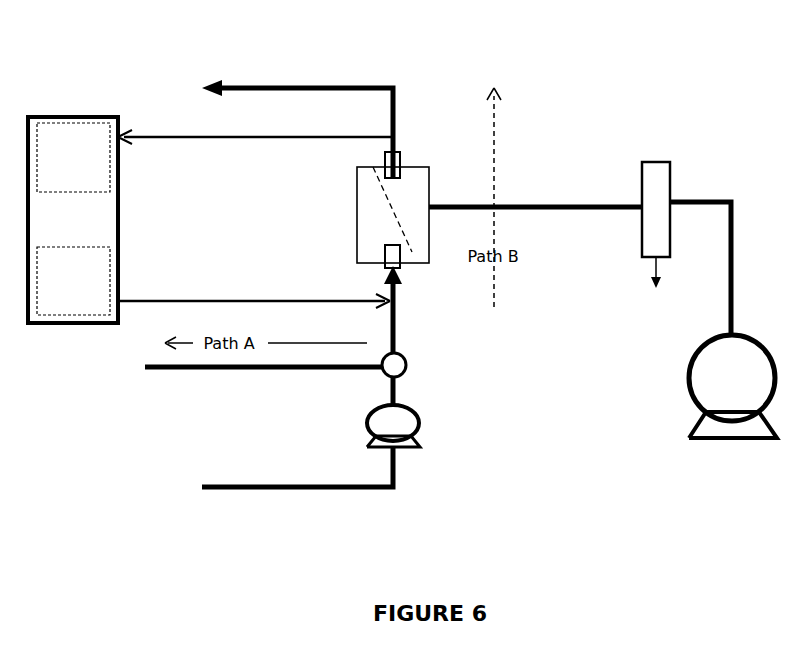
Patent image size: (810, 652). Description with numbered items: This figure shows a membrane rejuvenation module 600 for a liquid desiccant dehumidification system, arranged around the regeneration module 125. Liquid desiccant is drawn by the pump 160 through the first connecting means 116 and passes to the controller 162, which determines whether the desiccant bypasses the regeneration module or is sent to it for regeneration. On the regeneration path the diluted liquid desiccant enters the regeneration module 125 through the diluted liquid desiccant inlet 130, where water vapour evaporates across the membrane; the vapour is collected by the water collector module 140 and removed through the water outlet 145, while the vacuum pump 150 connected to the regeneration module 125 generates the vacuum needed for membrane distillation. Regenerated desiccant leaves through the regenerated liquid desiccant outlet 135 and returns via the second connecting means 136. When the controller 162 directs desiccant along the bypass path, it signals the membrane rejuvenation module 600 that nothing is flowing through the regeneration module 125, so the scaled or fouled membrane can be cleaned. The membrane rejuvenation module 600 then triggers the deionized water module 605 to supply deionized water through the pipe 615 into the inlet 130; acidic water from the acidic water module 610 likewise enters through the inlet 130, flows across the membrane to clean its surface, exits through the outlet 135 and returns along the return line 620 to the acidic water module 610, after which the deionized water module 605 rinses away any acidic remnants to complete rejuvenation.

The first connecting means 116 is at (221, 497).
The regeneration module 125 is at (433, 188).
The diluted liquid desiccant inlet 130 is at (405, 268).
The regenerated liquid desiccant outlet 135 is at (401, 153).
The second connecting means 136 is at (256, 82).
The water collector module 140 is at (663, 190).
The water outlet 145 is at (663, 286).
The vacuum pump 150 is at (760, 335).
The pump 160 is at (425, 442).
The controller 162 is at (380, 371).
The membrane rejuvenation module 600 is at (73, 220).
The deionized water module 605 is at (73, 157).
The acidic water module 610 is at (73, 281).
The pipe 615 is at (254, 290).
The feedback signal line 620 is at (255, 147).